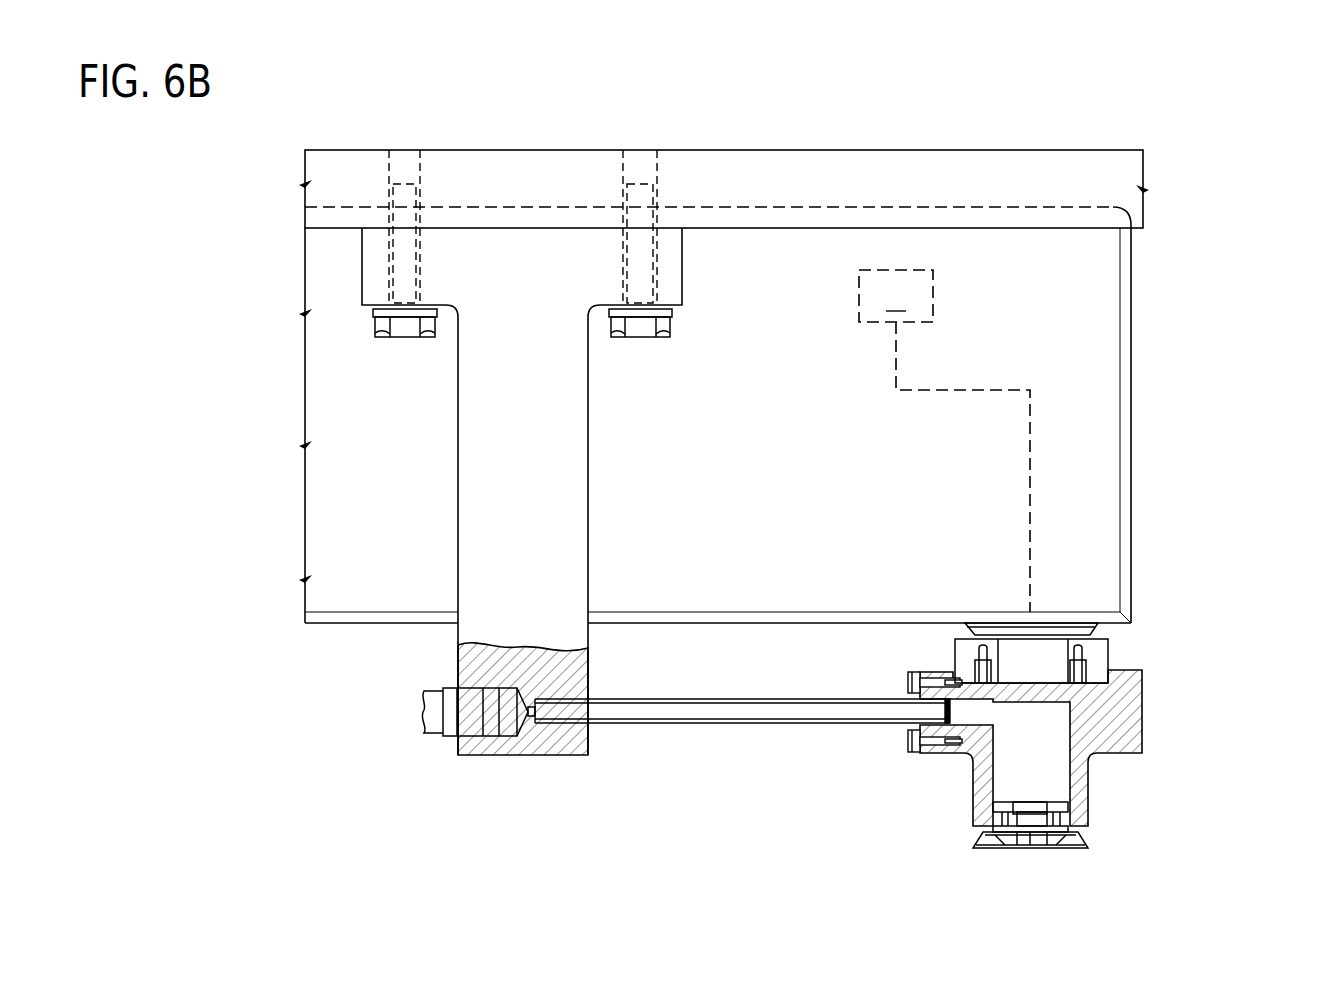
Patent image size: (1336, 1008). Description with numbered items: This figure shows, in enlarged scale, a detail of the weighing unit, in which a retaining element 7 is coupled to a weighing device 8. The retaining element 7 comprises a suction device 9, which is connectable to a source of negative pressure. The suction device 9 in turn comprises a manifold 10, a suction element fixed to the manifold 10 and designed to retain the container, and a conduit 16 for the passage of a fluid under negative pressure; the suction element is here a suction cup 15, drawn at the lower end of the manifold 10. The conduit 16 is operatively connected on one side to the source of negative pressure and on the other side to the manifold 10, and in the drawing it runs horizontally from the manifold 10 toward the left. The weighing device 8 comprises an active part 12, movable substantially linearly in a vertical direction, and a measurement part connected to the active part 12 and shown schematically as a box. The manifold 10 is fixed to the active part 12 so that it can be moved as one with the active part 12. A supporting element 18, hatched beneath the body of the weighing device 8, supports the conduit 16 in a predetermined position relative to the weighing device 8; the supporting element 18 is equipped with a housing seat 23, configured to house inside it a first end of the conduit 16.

The retaining element 7 is at (927, 699).
The weighing device 8 is at (791, 450).
The suction device 9 is at (927, 699).
The manifold 10 is at (1114, 688).
The active part 12 is at (1120, 647).
The suction cup 15 is at (1094, 847).
The conduit 16 is at (760, 730).
The supporting element 18 is at (602, 670).
The housing seat 23 is at (526, 712).